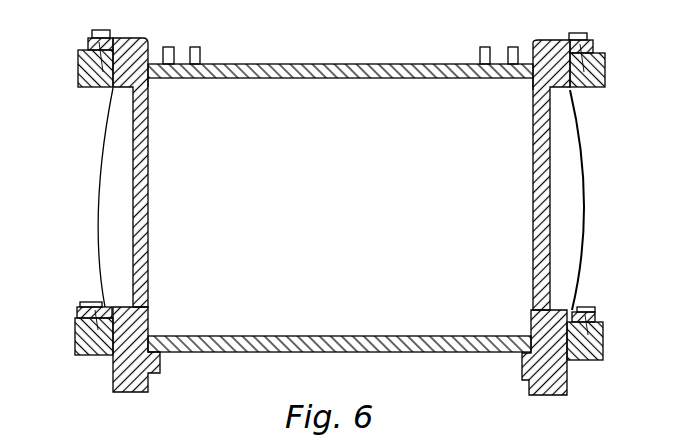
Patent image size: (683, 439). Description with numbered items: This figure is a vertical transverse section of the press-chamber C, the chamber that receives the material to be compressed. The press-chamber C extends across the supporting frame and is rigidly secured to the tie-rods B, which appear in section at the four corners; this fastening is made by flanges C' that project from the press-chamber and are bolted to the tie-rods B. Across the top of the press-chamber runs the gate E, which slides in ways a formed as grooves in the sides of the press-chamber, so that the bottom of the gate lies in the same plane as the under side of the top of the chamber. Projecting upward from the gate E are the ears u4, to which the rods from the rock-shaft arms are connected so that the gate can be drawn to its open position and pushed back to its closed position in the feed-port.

The tie-rod B is at (78, 72).
The press-chamber C is at (341, 199).
The flange C' is at (336, 174).
The gate E is at (352, 65).
The ear u4 is at (169, 46).
The ways a is at (148, 79).